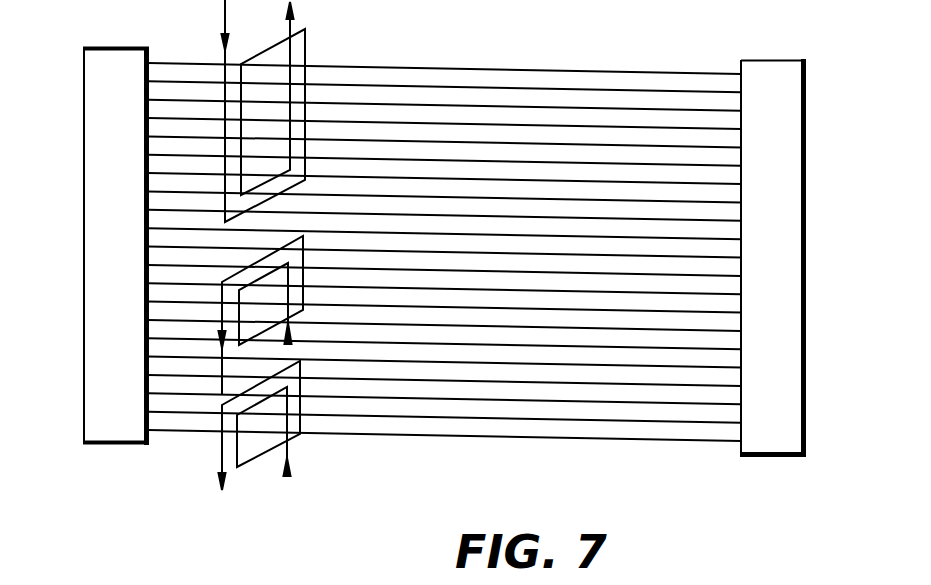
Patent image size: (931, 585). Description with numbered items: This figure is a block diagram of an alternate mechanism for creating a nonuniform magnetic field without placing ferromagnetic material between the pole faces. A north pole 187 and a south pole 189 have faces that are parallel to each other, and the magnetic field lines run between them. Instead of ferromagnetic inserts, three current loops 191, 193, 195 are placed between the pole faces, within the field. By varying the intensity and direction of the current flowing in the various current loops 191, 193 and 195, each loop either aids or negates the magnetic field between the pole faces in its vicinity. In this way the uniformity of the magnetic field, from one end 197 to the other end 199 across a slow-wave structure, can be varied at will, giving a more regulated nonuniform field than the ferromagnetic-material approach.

The north pole 187 is at (88, 47).
The south pole 189 is at (796, 60).
The current loop 191 is at (294, 22).
The current loop 193 is at (258, 455).
The current loop 195 is at (304, 294).
The magnetic field end 197 is at (553, 70).
The magnetic field end 199 is at (500, 437).